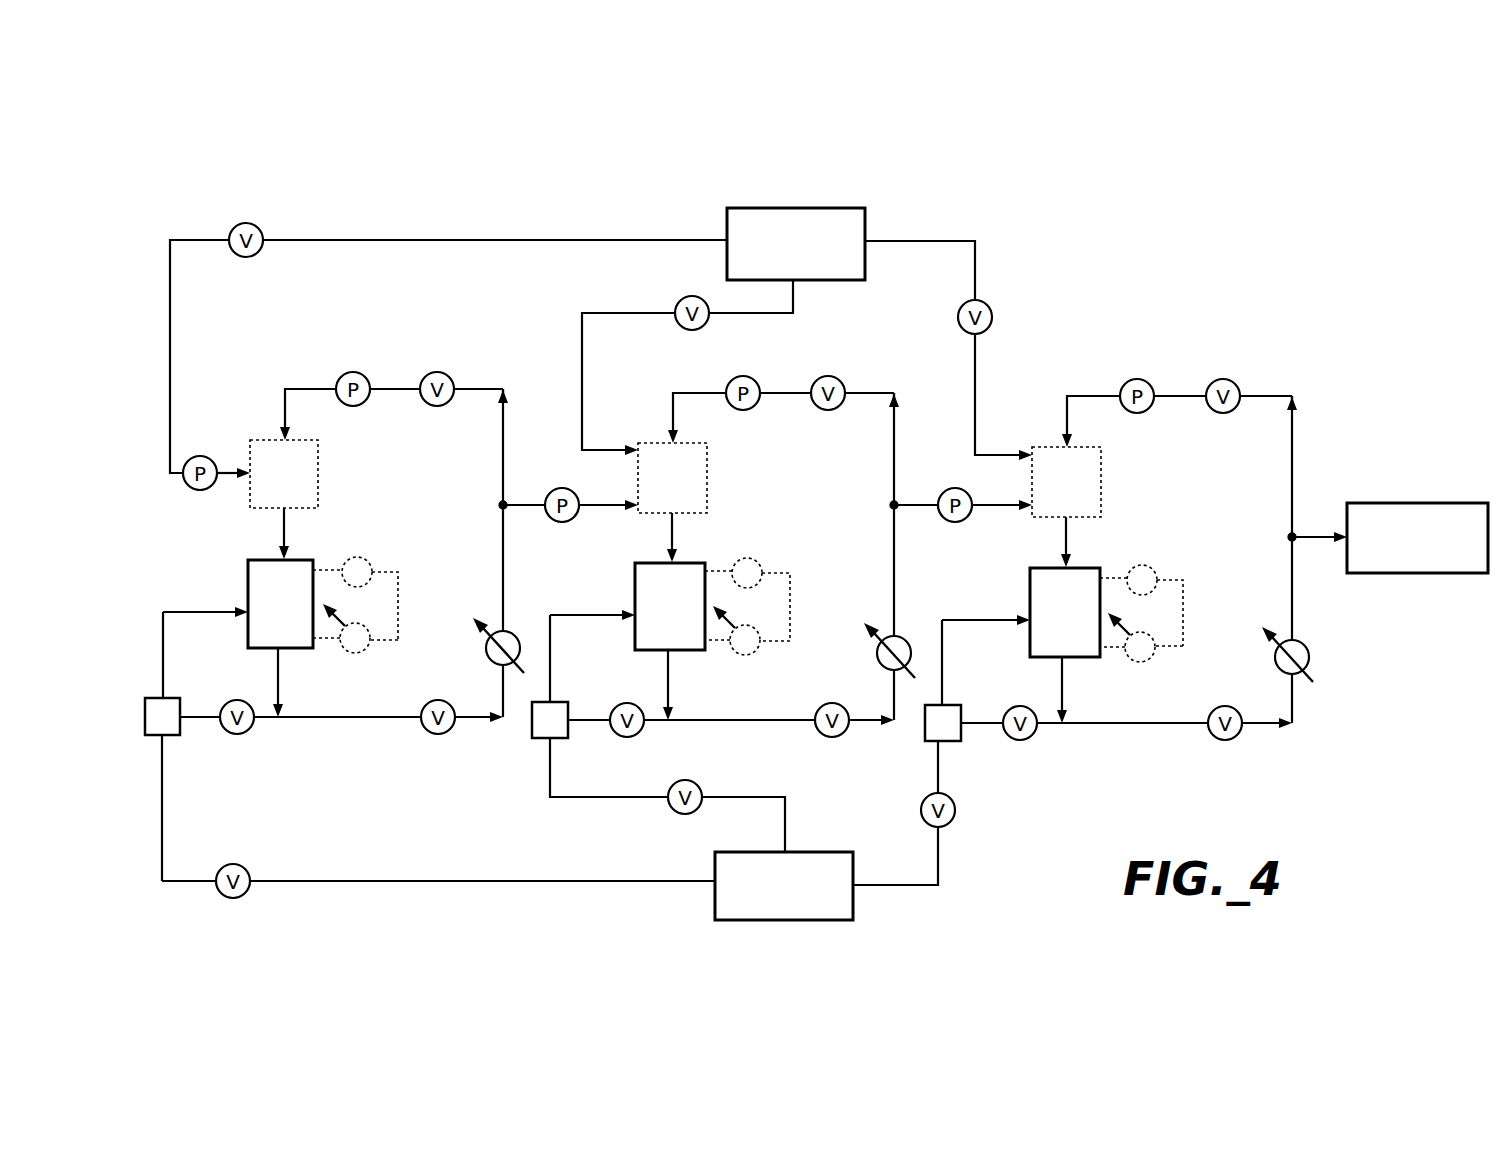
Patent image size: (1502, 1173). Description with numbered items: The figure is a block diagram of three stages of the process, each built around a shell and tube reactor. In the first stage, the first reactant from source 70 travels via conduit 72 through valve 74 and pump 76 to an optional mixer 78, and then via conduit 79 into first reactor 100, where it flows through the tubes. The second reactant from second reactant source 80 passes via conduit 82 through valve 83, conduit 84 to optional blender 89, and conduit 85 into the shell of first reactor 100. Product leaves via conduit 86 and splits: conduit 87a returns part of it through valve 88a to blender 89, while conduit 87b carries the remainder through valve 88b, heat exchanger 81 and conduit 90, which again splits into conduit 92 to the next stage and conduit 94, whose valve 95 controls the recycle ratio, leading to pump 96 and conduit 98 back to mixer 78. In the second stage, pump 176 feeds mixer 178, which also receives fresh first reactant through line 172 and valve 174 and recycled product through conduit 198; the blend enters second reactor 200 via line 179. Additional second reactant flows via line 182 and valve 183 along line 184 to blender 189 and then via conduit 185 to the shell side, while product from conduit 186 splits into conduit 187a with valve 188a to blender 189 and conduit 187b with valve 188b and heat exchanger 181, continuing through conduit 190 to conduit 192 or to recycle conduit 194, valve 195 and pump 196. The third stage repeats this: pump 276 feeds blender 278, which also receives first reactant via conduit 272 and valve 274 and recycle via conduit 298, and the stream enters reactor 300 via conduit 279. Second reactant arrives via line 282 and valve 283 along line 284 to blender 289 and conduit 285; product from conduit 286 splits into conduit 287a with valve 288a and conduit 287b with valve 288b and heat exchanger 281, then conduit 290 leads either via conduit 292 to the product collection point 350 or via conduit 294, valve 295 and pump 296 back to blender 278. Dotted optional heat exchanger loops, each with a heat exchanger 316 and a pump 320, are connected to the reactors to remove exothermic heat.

The first reactant source 70 is at (727, 215).
The conduit 72 is at (431, 240).
The valve 74 is at (262, 226).
The pump 76 is at (203, 455).
The mixer 78 is at (318, 455).
The conduit 79 is at (284, 528).
The second reactant source 80 is at (820, 852).
The heat exchanger 81 is at (485, 645).
The conduit 82 is at (420, 881).
The valve 83 is at (233, 864).
The conduit 84 is at (163, 800).
The conduit 85 is at (175, 612).
The conduit 86 is at (282, 672).
The conduit 87a is at (265, 718).
The conduit 87b is at (340, 718).
The valve 88a is at (237, 700).
The valve 88b is at (445, 735).
The blender 89 is at (175, 735).
The conduit 90 is at (503, 560).
The conduit 92 is at (503, 505).
The conduit 94 is at (473, 388).
The valve 95 is at (437, 372).
The pump 96 is at (353, 372).
The conduit 98 is at (313, 388).
The first reactor 100 is at (262, 555).
The line 172 is at (797, 305).
The valve 174 is at (683, 298).
The pump 176 is at (578, 500).
The mixer 178 is at (707, 460).
The line 179 is at (672, 530).
The heat exchanger 181 is at (877, 655).
The line 182 is at (767, 800).
The valve 183 is at (672, 813).
The line 184 is at (548, 800).
The conduit 185 is at (565, 615).
The conduit 186 is at (672, 677).
The conduit 187a is at (655, 722).
The conduit 187b is at (730, 722).
The valve 188a is at (627, 703).
The valve 188b is at (838, 738).
The blender 189 is at (563, 738).
The conduit 190 is at (894, 556).
The conduit 192 is at (894, 505).
The conduit 194 is at (868, 392).
The valve 195 is at (828, 376).
The pump 196 is at (743, 376).
The conduit 198 is at (676, 390).
The second reactor 200 is at (635, 575).
The conduit 272 is at (935, 240).
The valve 274 is at (988, 303).
The pump 276 is at (972, 505).
The blender 278 is at (1101, 465).
The conduit 279 is at (1066, 535).
The heat exchanger 281 is at (1270, 662).
The line 282 is at (940, 875).
The valve 283 is at (958, 822).
The line 284 is at (938, 770).
The conduit 285 is at (990, 617).
The conduit 286 is at (1066, 678).
The conduit 287a is at (1047, 725).
The conduit 287b is at (1128, 725).
The valve 288a is at (1020, 706).
The valve 288b is at (1230, 740).
The blender 289 is at (945, 740).
The conduit 290 is at (1292, 598).
The conduit 292 is at (1296, 535).
The conduit 294 is at (1292, 435).
The valve 295 is at (1222, 378).
The pump 296 is at (1135, 378).
The conduit 298 is at (1080, 395).
The reactor 300 is at (1030, 580).
The heat exchanger 316 is at (366, 651).
The pump 320 is at (368, 557).
The product collection point 350 is at (1378, 503).